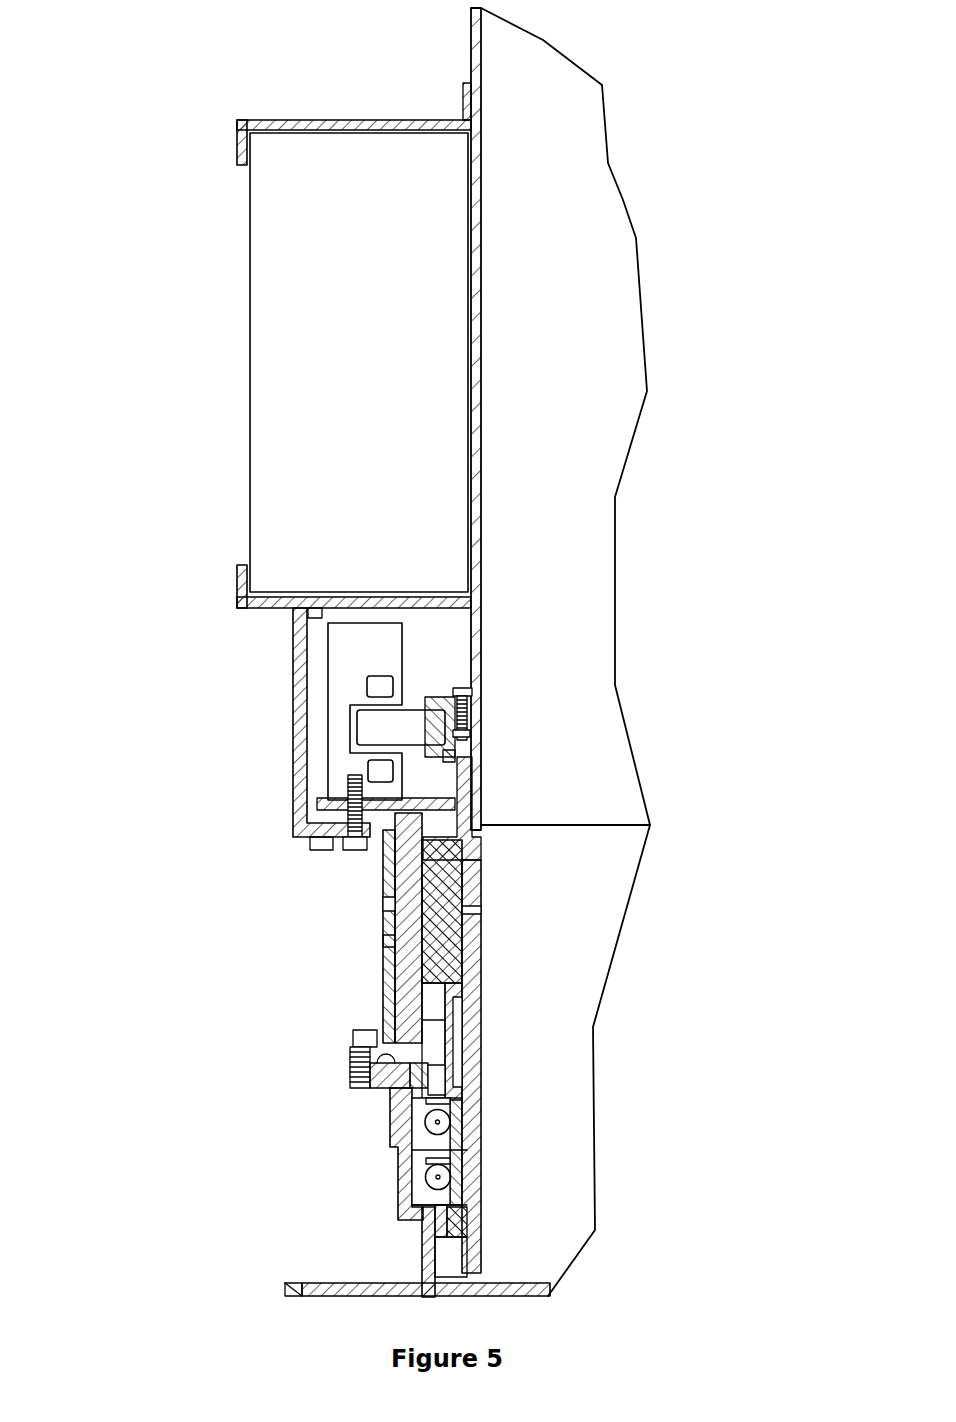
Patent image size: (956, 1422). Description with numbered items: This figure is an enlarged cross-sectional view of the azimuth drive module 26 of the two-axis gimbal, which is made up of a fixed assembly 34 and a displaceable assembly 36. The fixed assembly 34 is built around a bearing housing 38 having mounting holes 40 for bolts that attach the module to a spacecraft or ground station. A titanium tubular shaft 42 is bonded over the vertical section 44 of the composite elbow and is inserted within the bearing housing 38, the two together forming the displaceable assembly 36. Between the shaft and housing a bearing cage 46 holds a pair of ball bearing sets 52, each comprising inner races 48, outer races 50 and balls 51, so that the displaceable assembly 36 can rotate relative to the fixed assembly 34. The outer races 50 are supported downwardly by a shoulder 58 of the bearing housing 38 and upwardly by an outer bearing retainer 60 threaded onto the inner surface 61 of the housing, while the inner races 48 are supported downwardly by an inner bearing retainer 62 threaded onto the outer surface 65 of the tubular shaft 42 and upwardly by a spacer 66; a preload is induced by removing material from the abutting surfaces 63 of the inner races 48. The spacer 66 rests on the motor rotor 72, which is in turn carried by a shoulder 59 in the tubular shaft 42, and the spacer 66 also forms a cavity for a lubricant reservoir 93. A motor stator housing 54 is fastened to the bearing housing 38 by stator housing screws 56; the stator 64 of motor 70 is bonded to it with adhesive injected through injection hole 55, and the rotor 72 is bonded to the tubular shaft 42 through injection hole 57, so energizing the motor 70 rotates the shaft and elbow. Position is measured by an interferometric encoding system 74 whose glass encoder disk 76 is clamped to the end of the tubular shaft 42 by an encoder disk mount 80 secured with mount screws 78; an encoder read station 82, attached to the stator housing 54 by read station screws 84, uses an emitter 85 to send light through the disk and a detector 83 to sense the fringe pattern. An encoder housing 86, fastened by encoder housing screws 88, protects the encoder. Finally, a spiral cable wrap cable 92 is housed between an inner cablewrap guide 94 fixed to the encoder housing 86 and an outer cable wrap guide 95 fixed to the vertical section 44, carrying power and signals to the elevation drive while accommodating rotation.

The azimuth drive module 26 is at (150, 732).
The fixed assembly 34 is at (273, 1174).
The displaceable assembly 36 is at (587, 958).
The bearing housing 38 is at (287, 1287).
The mounting holes 40 is at (308, 1280).
The tubular shaft 42 is at (470, 880).
The vertical section of elbow 44 is at (481, 560).
The bearing cage 46 is at (462, 1228).
The inner bearing races 48 is at (442, 1112).
The outer bearing races 50 is at (418, 1122).
The balls 51 is at (445, 1122).
The bearing sets 52 is at (408, 1133).
The motor stator housing 54 is at (390, 973).
The injection hole 55 is at (385, 908).
The motor stator housing screws 56 is at (353, 1035).
The injection hole 57 is at (470, 910).
The shoulder 58 is at (412, 1207).
The shoulder 59 is at (478, 847).
The outer bearing retainer 60 is at (350, 1060).
The inner surface 61 is at (352, 1082).
The inner bearing retainer 62 is at (440, 1247).
The abutting surfaces 63 is at (445, 1150).
The motor stator 64 is at (408, 872).
The outer surface 65 is at (458, 1268).
The spacer 66 is at (455, 1040).
The motor 70 is at (385, 942).
The motor rotor 72 is at (460, 967).
The interferometric encoding system 74 is at (312, 638).
The encoder disk 76 is at (397, 713).
The encoder disk mount screws 78 is at (466, 690).
The encoder disk mount 80 is at (455, 738).
The encoder read station 82 is at (337, 707).
The detector 83 is at (393, 770).
The encoder read station screws 84 is at (350, 850).
The emitter 85 is at (367, 685).
The encoder housing 86 is at (298, 735).
The encoder housing screws 88 is at (330, 840).
The cable wrap cable 92 is at (318, 338).
The lubricant reservoir 93 is at (458, 1005).
The inner cablewrap guide 94 is at (237, 590).
The outer cable wrap guide 95 is at (237, 140).